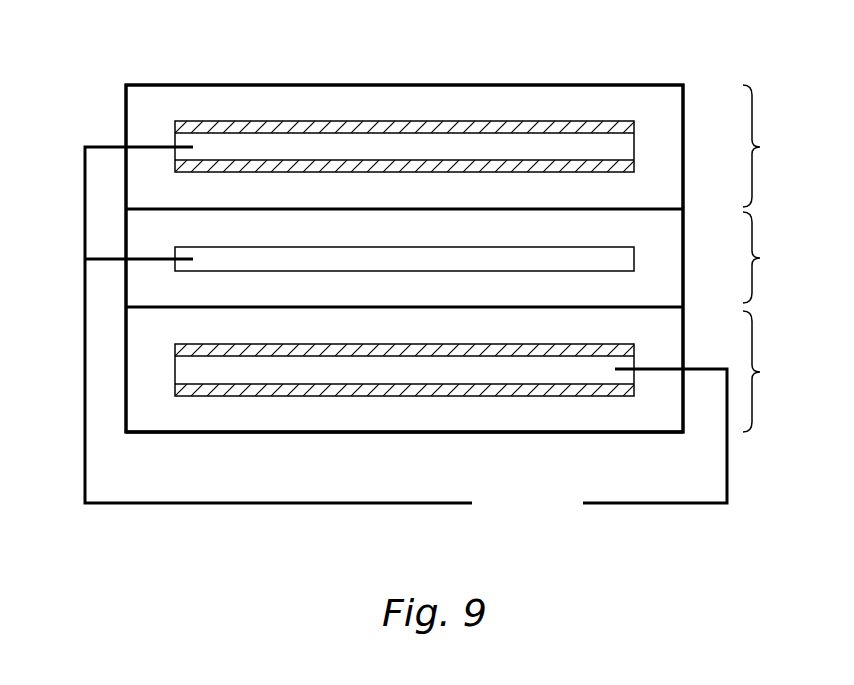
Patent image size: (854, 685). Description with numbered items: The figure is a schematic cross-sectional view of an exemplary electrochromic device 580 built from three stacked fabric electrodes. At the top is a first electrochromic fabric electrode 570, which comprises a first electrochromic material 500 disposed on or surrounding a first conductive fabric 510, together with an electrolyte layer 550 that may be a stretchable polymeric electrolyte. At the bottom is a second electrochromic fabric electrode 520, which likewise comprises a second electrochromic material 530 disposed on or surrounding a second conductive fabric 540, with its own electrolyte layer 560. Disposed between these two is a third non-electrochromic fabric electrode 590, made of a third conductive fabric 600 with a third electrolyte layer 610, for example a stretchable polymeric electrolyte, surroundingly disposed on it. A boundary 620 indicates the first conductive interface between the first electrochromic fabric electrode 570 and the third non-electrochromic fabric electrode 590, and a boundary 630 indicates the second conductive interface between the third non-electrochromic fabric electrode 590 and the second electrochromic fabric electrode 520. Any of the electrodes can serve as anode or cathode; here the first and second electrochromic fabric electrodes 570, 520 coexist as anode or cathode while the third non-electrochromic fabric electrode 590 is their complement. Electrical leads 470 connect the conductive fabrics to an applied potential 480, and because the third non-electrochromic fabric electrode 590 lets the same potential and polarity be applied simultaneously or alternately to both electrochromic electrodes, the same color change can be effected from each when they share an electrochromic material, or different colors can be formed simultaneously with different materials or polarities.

The electrical lead wires 470 is at (83, 368).
The potential source 480 is at (511, 520).
The first electrochromic material 500 is at (490, 121).
The first conductive fabric 510 is at (330, 147).
The second electrochromic fabric electrode 520 is at (772, 371).
The second electrochromic material 530 is at (490, 344).
The second conductive fabric 540 is at (330, 370).
The electrolyte layer 550 is at (150, 113).
The electrolyte layer 560 is at (380, 414).
The first electrochromic fabric electrode 570 is at (772, 146).
The electrochromic device 580 is at (286, 53).
The third non-electrochromic fabric electrode 590 is at (772, 257).
The third conductive fabric 600 is at (337, 258).
The third electrolyte layer 610 is at (637, 288).
The boundary 620 is at (313, 208).
The boundary 630 is at (383, 306).